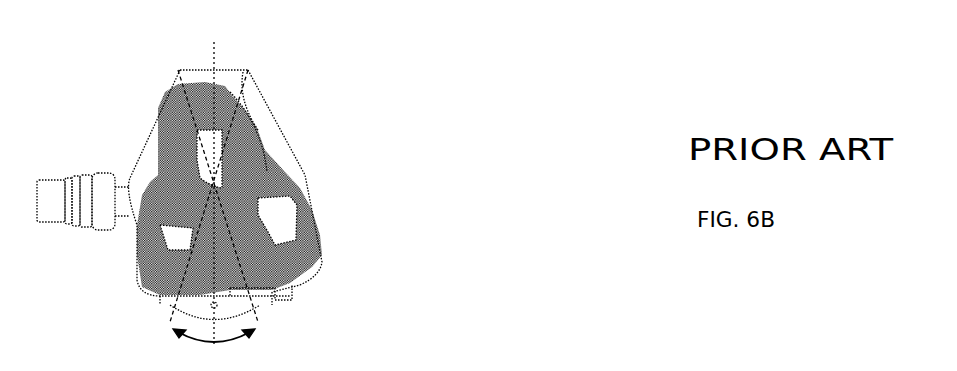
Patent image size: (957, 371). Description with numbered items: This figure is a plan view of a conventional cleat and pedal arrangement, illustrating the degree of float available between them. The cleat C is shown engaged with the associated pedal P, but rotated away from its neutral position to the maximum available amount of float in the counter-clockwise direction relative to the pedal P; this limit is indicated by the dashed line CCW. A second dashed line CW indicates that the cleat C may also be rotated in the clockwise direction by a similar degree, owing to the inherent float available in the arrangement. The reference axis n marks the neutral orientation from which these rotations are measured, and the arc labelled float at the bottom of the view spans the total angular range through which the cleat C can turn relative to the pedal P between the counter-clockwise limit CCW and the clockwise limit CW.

The pedal P is at (270, 117).
The cleat C is at (318, 238).
The dashed line CCW is at (175, 63).
The dashed line CW is at (252, 60).
The normal axis n is at (213, 185).
The float angle range float is at (249, 329).